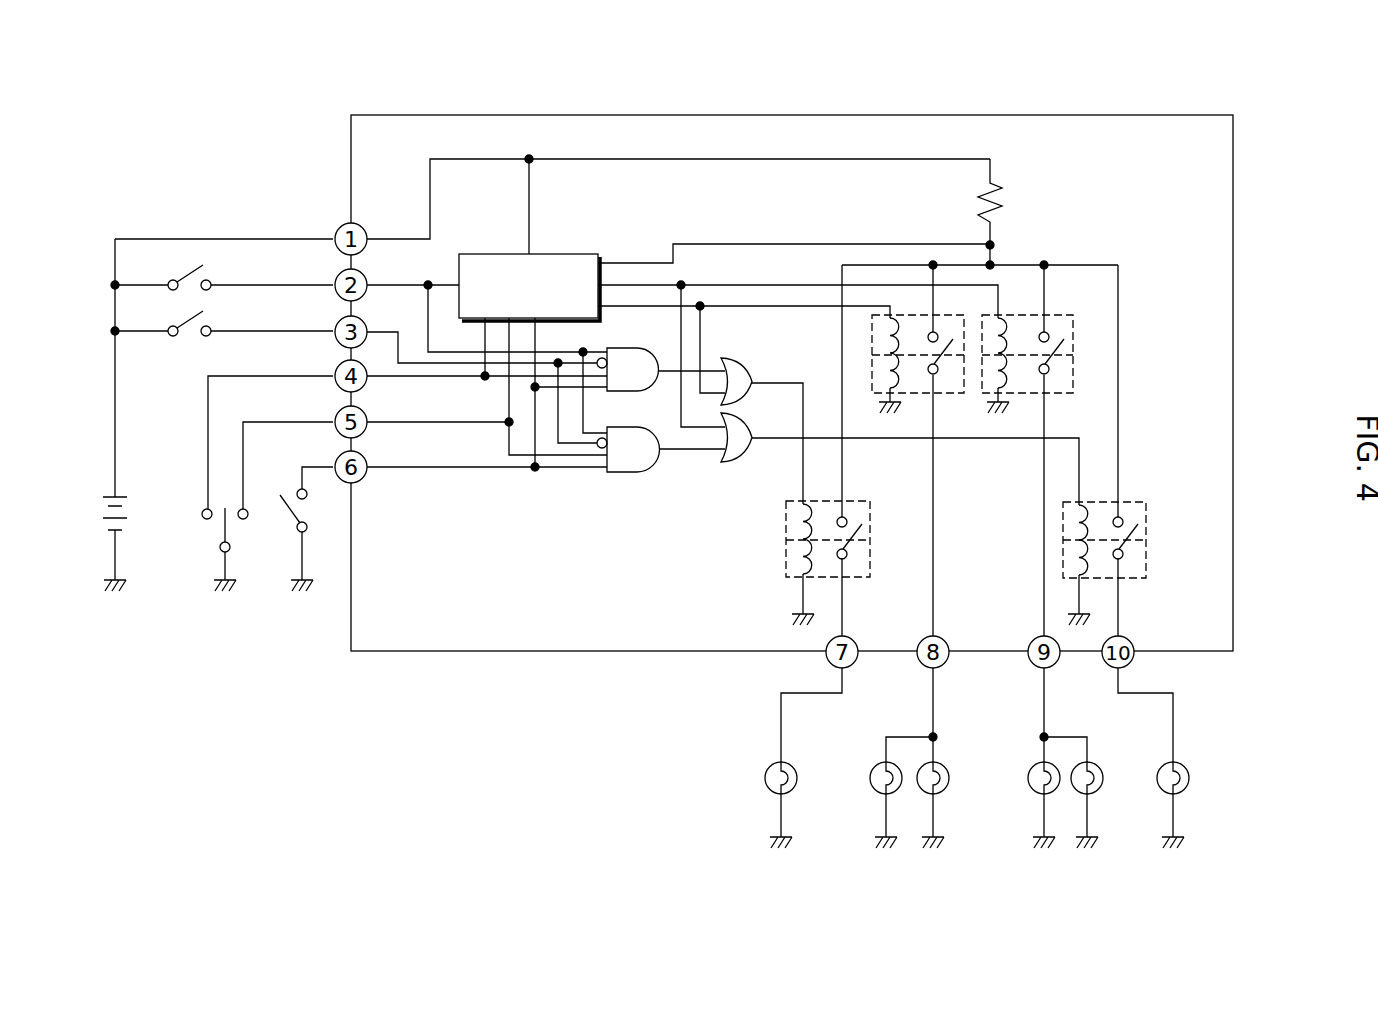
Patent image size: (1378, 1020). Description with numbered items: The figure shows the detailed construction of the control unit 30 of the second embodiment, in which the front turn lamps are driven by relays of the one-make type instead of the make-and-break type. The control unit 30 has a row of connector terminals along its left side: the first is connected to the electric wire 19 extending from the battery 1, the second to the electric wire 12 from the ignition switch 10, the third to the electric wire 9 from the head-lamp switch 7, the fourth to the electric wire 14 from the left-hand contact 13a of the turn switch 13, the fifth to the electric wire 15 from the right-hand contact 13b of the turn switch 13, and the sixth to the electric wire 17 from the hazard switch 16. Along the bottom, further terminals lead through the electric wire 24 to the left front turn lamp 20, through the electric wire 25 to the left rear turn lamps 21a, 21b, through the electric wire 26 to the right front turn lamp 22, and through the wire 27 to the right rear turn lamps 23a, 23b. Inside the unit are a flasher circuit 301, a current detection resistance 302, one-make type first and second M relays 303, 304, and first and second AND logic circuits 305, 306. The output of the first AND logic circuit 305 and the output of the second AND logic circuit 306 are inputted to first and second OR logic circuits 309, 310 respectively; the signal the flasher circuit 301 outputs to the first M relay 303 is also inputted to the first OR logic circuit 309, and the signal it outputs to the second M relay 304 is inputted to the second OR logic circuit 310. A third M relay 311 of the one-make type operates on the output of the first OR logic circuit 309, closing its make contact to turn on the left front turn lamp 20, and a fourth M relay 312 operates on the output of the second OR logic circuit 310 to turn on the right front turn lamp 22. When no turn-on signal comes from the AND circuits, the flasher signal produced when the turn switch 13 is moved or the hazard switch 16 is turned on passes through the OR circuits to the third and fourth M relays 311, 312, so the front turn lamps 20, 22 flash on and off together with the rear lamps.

The battery 1 is at (98, 518).
The head-lamp switch 7 is at (181, 317).
The electric wire 9 is at (260, 329).
The ignition switch 10 is at (179, 270).
The electric wire 12 is at (257, 283).
The turn switch 13 is at (230, 548).
The left-hand contact 13a is at (202, 513).
The right-hand contact 13b is at (268, 502).
The electric wire 14 is at (267, 374).
The electric wire 15 is at (284, 420).
The hazard switch 16 is at (305, 516).
The electric wire 17 is at (310, 465).
The electric wire 19 is at (254, 237).
The left front turn lamp 20 is at (767, 792).
The left rear turn lamp 21a is at (871, 792).
The left rear turn lamp 21b is at (946, 792).
The right front turn lamp 22 is at (1188, 790).
The right rear turn lamp 23a is at (1100, 790).
The right rear turn lamp 23b is at (1028, 770).
The electric wire 24 is at (824, 686).
The electric wire 25 is at (930, 715).
The electric wire 26 is at (1120, 680).
The line 27 is at (1046, 712).
The control unit 30 is at (728, 115).
The flasher circuit 301 is at (573, 254).
The current detection resistance 302 is at (1002, 198).
The first M relay 303 is at (872, 340).
The second M relay 304 is at (1066, 393).
The first AND logic circuit 305 is at (640, 341).
The second AND logic circuit 306 is at (640, 421).
The first OR logic circuit 309 is at (748, 398).
The second OR logic circuit 310 is at (748, 455).
The third M relay 311 is at (786, 556).
The fourth M relay 312 is at (1146, 558).